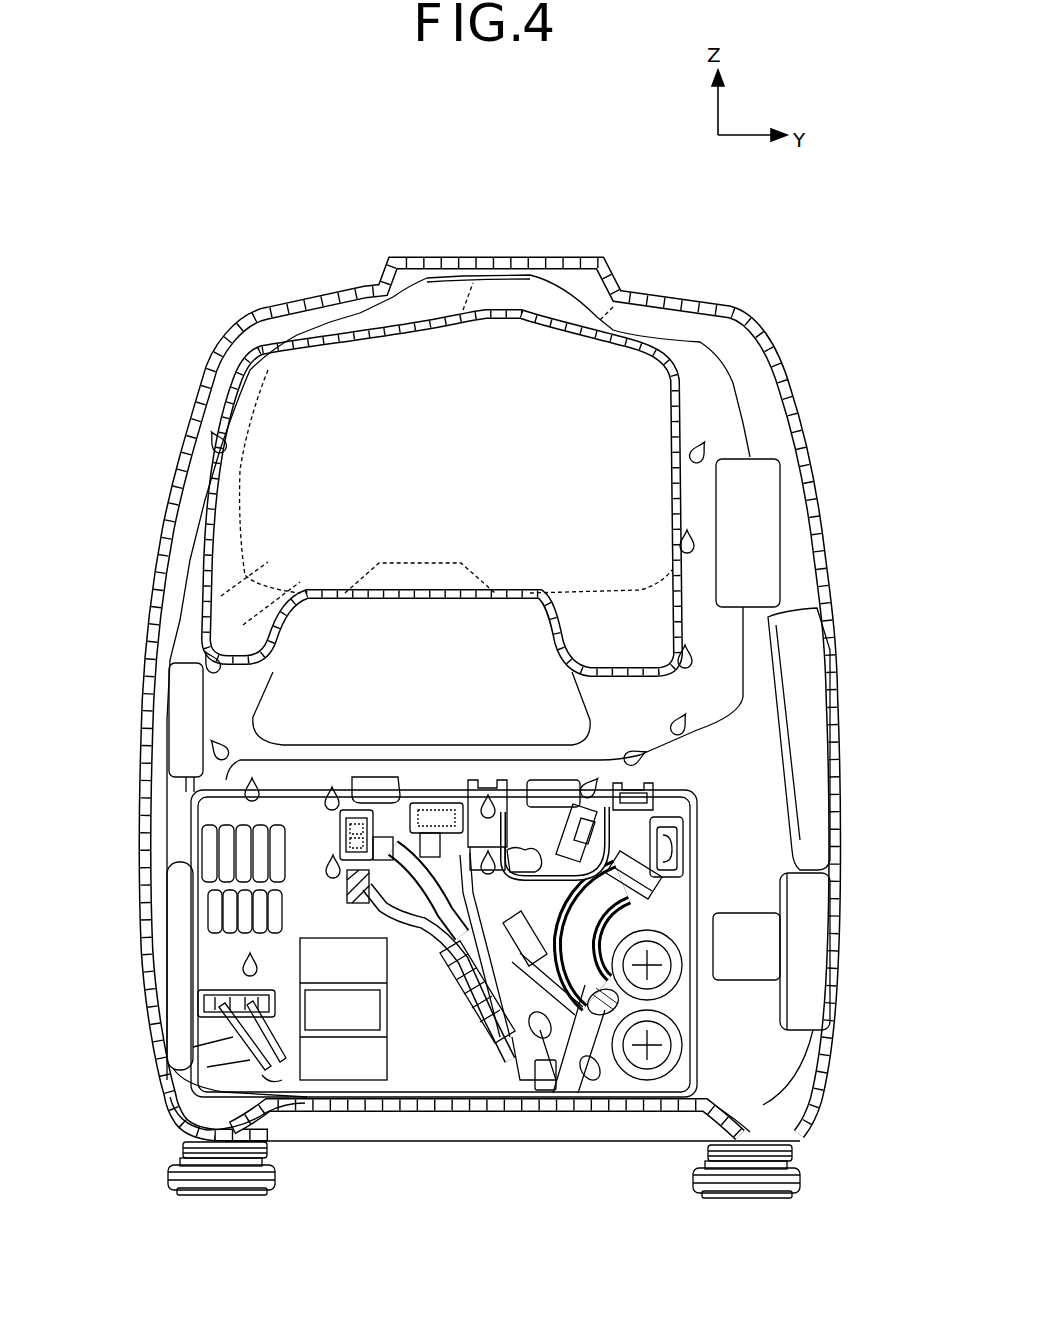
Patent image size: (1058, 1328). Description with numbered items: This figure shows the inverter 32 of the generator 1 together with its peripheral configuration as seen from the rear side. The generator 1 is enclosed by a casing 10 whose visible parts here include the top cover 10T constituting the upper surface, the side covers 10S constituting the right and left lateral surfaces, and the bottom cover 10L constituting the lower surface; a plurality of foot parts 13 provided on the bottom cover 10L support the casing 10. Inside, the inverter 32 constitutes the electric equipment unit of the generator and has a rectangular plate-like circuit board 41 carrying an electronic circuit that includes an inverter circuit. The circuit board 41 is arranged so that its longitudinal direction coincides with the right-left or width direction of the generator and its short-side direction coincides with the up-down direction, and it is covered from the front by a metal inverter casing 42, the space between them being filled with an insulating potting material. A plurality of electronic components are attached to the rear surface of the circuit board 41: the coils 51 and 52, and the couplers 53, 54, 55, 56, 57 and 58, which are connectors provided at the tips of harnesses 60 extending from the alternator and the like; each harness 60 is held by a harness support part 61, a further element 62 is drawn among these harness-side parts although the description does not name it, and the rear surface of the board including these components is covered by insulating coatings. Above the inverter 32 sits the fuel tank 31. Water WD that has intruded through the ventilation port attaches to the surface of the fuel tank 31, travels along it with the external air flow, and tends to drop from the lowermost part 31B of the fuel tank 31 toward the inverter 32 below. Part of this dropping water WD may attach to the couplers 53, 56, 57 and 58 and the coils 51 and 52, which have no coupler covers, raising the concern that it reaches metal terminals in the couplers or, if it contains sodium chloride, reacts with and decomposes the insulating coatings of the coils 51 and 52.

The generator 1 is at (605, 202).
The casing 10 is at (290, 293).
The top cover 10T is at (712, 306).
The side covers 10S is at (182, 437).
The bottom cover 10L is at (672, 1145).
The foot parts 13 is at (218, 1196).
The fuel tank 31 is at (258, 328).
The lowermost part of the fuel tank 31B is at (320, 775).
The inverter 32 is at (770, 1107).
The circuit board 41 is at (680, 1005).
The inverter casing 42 is at (700, 1068).
The coil 51 is at (205, 850).
The coil 52 is at (213, 910).
The coupler 53 is at (205, 1000).
The coupler 54 is at (365, 785).
The coupler 55 is at (482, 790).
The coupler 56 is at (657, 800).
The coupler 57 is at (345, 893).
The coupler 58 is at (697, 840).
The harnesses 60 is at (575, 1100).
The harness support part 61 is at (345, 835).
The grommet 62 is at (435, 810).
The water WD is at (245, 783).